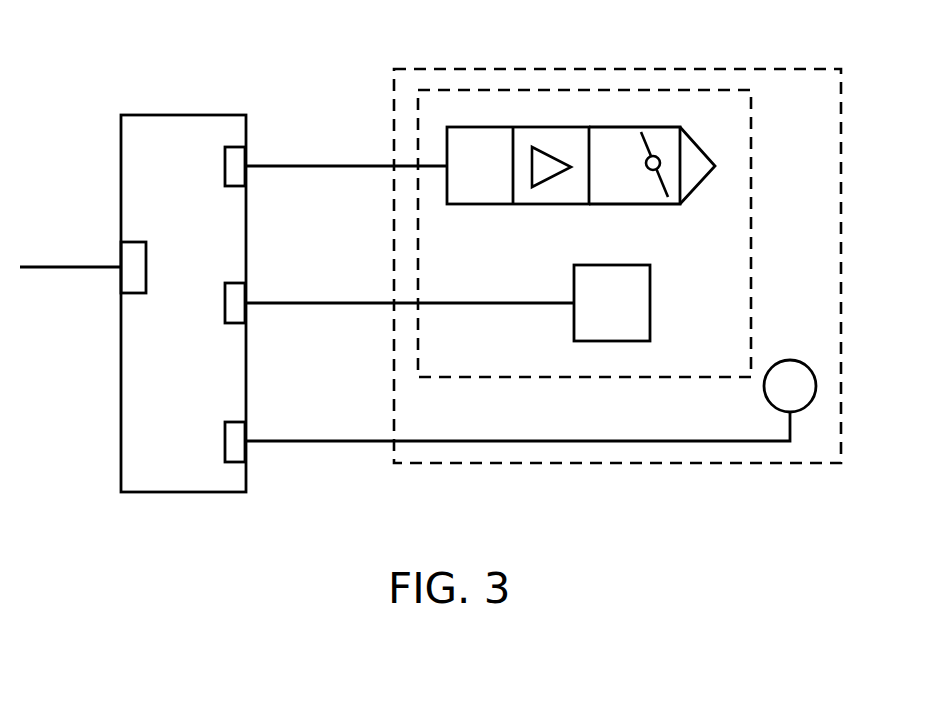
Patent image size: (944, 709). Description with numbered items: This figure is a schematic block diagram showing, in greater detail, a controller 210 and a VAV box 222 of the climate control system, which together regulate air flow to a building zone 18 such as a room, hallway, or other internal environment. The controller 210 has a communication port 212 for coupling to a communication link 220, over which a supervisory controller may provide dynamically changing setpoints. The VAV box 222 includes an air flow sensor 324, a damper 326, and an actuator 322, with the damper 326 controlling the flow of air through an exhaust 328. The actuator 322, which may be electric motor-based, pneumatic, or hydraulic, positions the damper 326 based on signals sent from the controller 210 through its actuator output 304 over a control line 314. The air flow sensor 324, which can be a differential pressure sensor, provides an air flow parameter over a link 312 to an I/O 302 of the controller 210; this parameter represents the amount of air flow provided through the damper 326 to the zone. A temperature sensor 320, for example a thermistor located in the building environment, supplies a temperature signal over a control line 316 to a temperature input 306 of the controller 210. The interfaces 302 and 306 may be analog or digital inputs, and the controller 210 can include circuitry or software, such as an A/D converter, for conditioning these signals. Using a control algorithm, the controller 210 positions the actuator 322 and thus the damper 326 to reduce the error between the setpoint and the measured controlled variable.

The building zone 18 is at (823, 205).
The controller 210 is at (205, 125).
The communication port 212 is at (133, 254).
The communication link 220 is at (52, 268).
The VAV box 222 is at (739, 135).
The I/O 302 is at (240, 156).
The actuator output 304 is at (238, 299).
The temperature input 306 is at (238, 449).
The link 312 is at (333, 165).
The control line 314 is at (372, 302).
The control line 316 is at (363, 443).
The temperature sensor 320 is at (803, 377).
The actuator 322 is at (638, 306).
The air flow sensor 324 is at (553, 140).
The damper 326 is at (631, 140).
The exhaust 328 is at (702, 143).